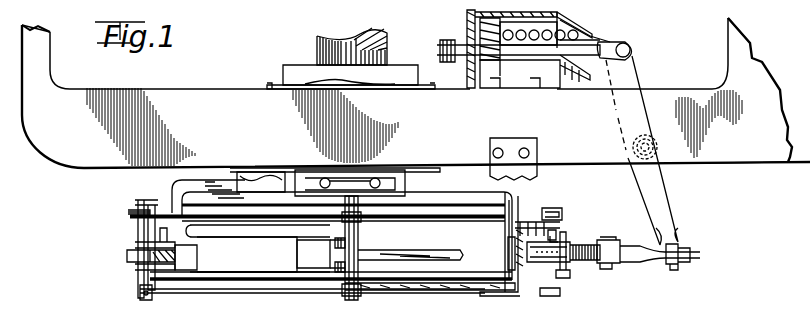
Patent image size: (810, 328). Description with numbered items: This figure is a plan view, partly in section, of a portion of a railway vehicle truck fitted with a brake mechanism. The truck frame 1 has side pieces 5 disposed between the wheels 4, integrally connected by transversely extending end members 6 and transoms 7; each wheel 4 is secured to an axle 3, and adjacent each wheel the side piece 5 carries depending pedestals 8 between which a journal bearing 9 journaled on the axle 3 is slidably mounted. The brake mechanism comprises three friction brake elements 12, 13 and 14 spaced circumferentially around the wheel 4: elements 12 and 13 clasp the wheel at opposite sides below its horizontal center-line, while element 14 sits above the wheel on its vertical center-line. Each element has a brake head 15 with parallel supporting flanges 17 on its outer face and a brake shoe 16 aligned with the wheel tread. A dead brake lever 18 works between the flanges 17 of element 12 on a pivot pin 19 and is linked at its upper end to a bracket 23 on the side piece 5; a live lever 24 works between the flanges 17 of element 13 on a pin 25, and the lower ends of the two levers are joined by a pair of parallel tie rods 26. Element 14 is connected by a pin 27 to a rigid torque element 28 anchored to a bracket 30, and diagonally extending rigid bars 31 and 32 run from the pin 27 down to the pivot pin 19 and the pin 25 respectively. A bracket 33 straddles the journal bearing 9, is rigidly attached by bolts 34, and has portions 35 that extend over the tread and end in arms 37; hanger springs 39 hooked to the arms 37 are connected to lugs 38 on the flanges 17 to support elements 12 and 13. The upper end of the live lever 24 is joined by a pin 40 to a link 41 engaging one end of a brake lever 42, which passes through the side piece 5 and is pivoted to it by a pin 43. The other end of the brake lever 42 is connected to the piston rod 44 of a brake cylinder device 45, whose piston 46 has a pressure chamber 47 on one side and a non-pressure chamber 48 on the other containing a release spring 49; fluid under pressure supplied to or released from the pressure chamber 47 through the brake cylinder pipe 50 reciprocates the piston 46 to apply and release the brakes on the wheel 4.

The truck frame 1 is at (194, 88).
The axle 3 is at (358, 36).
The wheel 4 is at (240, 284).
The side piece 5 is at (752, 157).
The end member 6 is at (48, 33).
The transom 7 is at (738, 44).
The pedestal 8 is at (268, 84).
The journal bearing 9 is at (295, 65).
The friction brake element 12 is at (190, 284).
The friction brake element 13 is at (514, 292).
The friction brake element 14 is at (302, 284).
The brake head 15 is at (390, 272).
The brake shoe 16 is at (197, 250).
The supporting flange 17 is at (134, 244).
The dead brake lever 18 is at (128, 254).
The pivot pin 19 is at (138, 294).
The bracket 23 is at (265, 172).
The live lever 24 is at (598, 262).
The pin 25 is at (560, 210).
The tie rod 26 is at (134, 212).
The pin 27 is at (346, 296).
The torque element 28 is at (447, 255).
The bracket 30 is at (536, 158).
The rigid bar 31 is at (254, 215).
The rigid bar 32 is at (437, 292).
The bracket 33 is at (392, 172).
The bolt 34 is at (352, 180).
The bracket portion 35 is at (208, 180).
The arm 37 is at (538, 212).
The lug 38 is at (165, 215).
The hanger spring 39 is at (566, 228).
The pin 40 is at (606, 270).
The link 41 is at (668, 264).
The brake lever 42 is at (655, 183).
The pin 43 is at (657, 147).
The piston rod 44 is at (628, 44).
The brake cylinder device 45 is at (556, 32).
The piston 46 is at (468, 24).
The pressure chamber 47 is at (466, 38).
The non-pressure chamber 48 is at (596, 36).
The release spring 49 is at (620, 40).
The brake cylinder pipe 50 is at (458, 56).